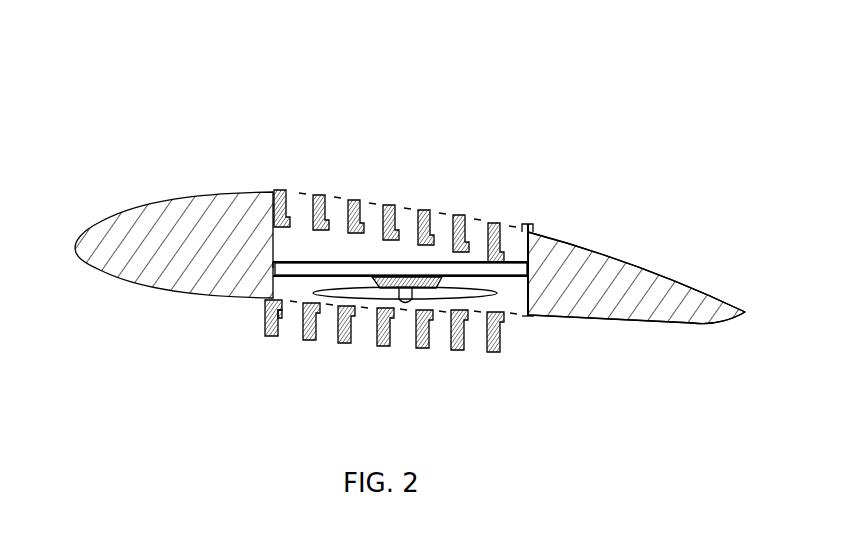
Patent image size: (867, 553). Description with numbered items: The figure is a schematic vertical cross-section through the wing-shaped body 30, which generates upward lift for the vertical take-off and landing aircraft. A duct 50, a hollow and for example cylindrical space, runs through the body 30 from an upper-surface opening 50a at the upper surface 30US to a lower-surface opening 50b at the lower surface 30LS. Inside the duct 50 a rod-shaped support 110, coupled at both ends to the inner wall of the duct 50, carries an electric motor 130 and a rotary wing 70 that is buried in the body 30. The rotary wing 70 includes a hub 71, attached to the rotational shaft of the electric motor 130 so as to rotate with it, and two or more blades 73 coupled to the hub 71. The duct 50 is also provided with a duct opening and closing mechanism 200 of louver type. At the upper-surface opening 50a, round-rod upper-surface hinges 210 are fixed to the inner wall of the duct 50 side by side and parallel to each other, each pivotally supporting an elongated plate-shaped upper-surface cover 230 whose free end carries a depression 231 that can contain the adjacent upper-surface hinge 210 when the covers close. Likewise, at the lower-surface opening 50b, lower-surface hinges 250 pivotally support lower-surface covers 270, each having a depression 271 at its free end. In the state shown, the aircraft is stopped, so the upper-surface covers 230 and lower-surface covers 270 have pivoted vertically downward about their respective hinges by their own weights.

The duct opening and closing mechanism 200 is at (472, 50).
The upper-surface hinge 210 is at (291, 189).
The upper-surface cover 230 is at (316, 243).
The depression 231 is at (332, 240).
The lower-surface hinge 250 is at (292, 310).
The lower-surface cover 270 is at (288, 304).
The depression 271 is at (283, 337).
The rotary wing 70 is at (338, 276).
The hub 71 is at (407, 299).
The blades 73 is at (412, 304).
The support 110 is at (519, 300).
The electric motor 130 is at (498, 293).
The duct 50 is at (513, 232).
The upper-surface opening 50a is at (522, 233).
The lower-surface opening 50b is at (530, 316).
The body 30 is at (627, 252).
The upper surface 30US is at (664, 267).
The lower surface 30LS is at (655, 324).